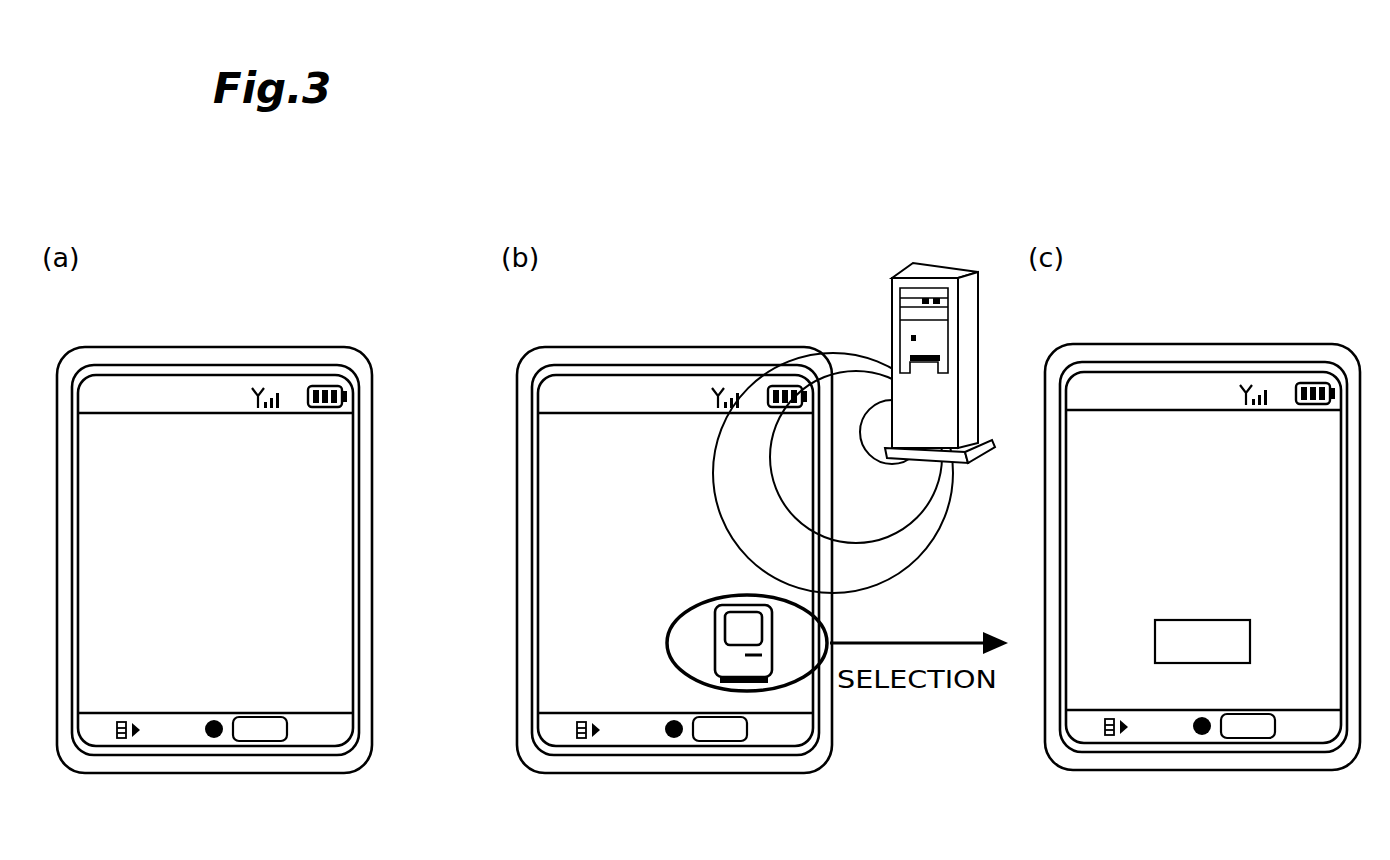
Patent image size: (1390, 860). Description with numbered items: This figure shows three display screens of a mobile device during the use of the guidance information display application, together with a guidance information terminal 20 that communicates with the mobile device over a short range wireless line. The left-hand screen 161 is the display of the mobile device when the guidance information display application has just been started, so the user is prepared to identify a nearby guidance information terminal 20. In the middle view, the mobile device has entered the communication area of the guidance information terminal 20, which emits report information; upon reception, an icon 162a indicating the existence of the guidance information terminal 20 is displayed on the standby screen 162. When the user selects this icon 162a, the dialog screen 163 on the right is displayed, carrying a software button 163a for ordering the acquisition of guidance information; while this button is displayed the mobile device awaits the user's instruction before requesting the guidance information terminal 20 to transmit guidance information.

The display screen at start of application 161 is at (170, 427).
The standby screen 162 is at (630, 427).
The icon 162a is at (740, 660).
The dialog screen 163 is at (1158, 424).
The software button 163a is at (1166, 656).
The guidance information terminal 20 is at (953, 262).